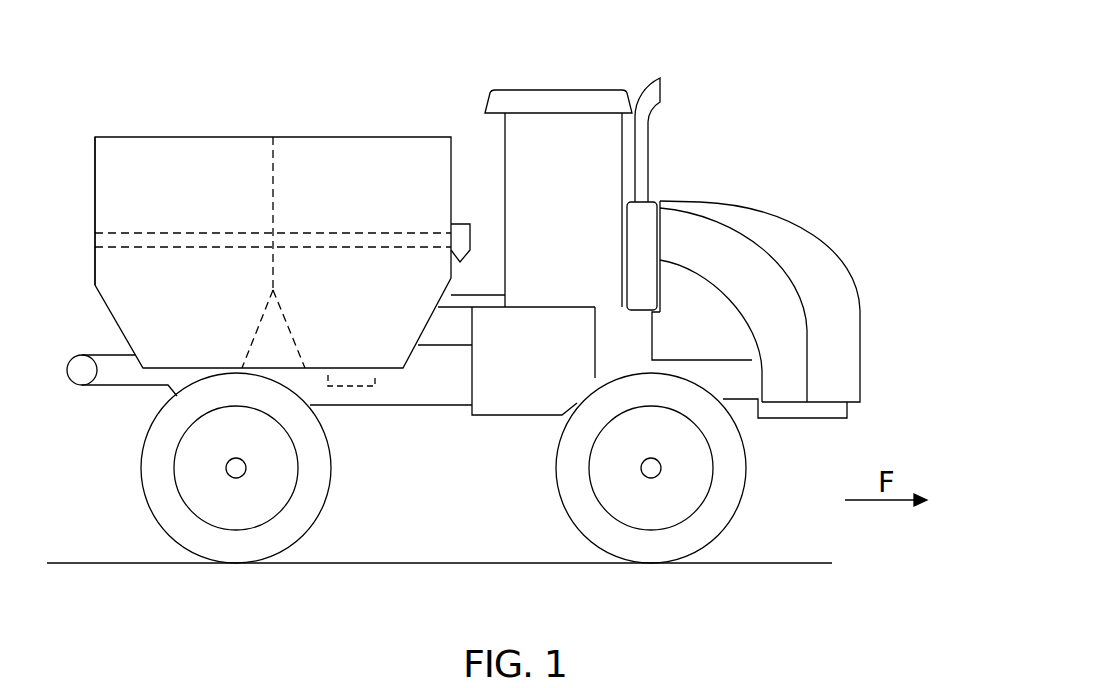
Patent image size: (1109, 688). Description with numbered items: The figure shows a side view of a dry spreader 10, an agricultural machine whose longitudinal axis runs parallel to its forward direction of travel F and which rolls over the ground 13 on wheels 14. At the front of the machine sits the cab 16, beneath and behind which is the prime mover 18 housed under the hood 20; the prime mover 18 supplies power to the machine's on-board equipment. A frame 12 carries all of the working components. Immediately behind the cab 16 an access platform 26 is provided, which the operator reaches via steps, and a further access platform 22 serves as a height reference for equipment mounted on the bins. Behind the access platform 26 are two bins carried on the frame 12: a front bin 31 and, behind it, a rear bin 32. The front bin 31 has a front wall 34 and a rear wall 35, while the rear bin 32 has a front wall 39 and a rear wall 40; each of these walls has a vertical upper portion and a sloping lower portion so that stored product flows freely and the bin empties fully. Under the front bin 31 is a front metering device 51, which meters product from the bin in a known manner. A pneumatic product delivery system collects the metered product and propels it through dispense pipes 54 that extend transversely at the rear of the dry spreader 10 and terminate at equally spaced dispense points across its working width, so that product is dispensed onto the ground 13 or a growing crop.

The dry spreader 10 is at (713, 107).
The frame 12 is at (448, 405).
The ground 13 is at (68, 563).
The wheels 14 is at (331, 496).
The cab 16 is at (566, 90).
The prime mover 18 is at (712, 343).
The hood 20 is at (791, 201).
The access platform 22 is at (552, 377).
The access platform 26 is at (481, 296).
The front bin 31 is at (383, 137).
The rear bin 32 is at (183, 137).
The front wall 34 is at (458, 161).
The rear wall 35 is at (280, 176).
The front wall 39 is at (267, 184).
The rear wall 40 is at (95, 172).
The front metering device 51 is at (352, 387).
The dispense pipes 54 is at (76, 355).